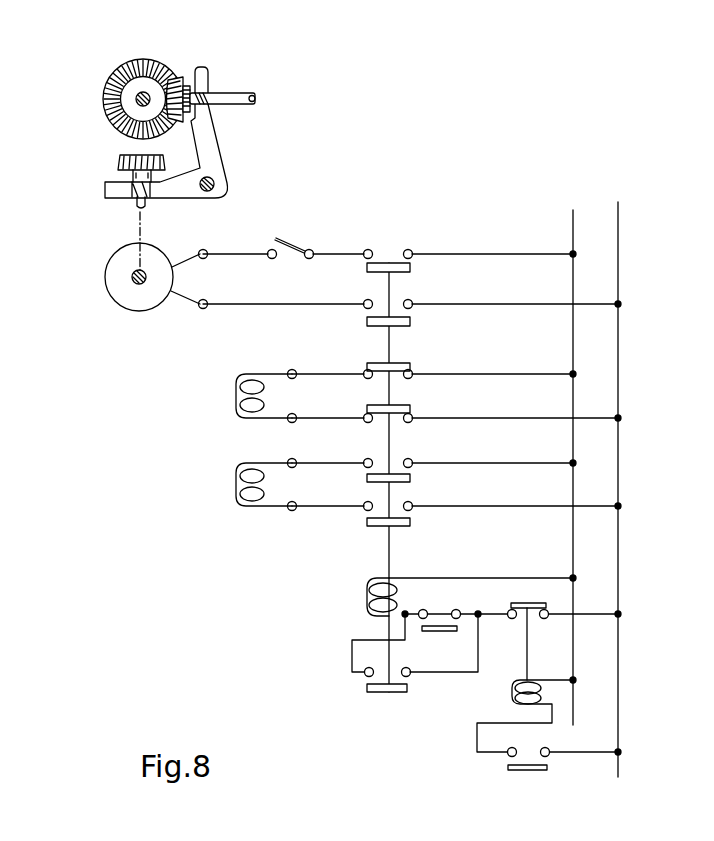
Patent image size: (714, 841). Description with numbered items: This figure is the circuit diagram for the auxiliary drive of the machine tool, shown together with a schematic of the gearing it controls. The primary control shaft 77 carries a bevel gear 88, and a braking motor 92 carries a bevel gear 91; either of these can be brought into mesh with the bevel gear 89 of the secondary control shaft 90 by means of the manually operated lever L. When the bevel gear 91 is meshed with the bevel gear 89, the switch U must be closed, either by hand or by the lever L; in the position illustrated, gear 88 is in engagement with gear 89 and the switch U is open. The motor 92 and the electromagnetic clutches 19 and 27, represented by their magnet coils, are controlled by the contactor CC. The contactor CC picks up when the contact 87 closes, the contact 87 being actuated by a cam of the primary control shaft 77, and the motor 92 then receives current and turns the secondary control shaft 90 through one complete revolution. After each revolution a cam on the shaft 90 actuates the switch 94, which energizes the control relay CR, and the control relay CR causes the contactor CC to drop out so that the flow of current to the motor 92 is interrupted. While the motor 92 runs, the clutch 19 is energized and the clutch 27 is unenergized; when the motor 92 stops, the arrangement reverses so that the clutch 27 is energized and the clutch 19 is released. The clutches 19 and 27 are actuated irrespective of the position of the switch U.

The bevel gear 89 is at (106, 103).
The secondary control shaft 90 is at (143, 91).
The bevel gear 88 is at (178, 82).
The primary control shaft 77 is at (245, 97).
The manually operated lever L is at (215, 166).
The bevel gear 91 is at (122, 160).
The braking motor 92 is at (122, 298).
The switch U is at (291, 238).
The electromagnetic clutch 27 is at (242, 388).
The electromagnetic clutch 19 is at (242, 479).
The contactor CC is at (385, 552).
The switch (contact) 87 is at (438, 624).
The control relay CR is at (539, 657).
The switch 94 is at (527, 772).